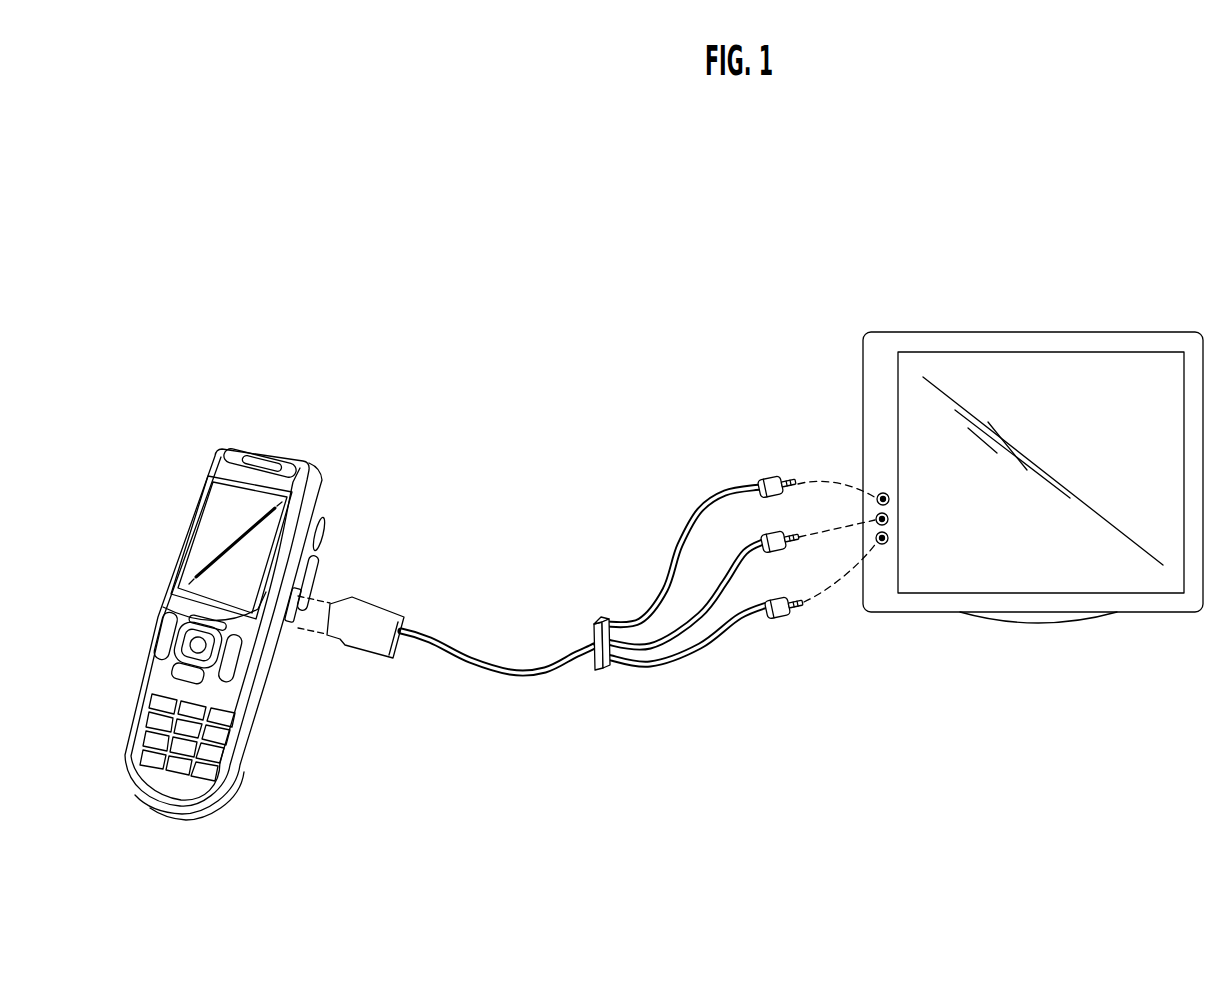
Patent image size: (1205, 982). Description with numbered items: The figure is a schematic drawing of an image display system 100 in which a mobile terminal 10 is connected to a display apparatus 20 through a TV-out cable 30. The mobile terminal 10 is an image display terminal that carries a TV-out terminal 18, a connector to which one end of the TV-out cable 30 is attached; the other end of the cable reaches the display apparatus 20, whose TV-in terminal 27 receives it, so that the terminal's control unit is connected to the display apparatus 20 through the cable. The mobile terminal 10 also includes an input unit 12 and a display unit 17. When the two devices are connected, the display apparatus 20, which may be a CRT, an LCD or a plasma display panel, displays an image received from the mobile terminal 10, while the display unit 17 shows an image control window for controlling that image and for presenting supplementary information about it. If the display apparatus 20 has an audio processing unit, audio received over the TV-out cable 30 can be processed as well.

The image display system 100 is at (333, 254).
The mobile terminal 10 is at (215, 405).
The input unit 12 is at (200, 645).
The display unit 17 is at (213, 528).
The TV-out terminal 18 is at (300, 615).
The TV-out cable 30 is at (474, 663).
The display apparatus 20 is at (1133, 296).
The TV-in terminal 27 is at (888, 538).